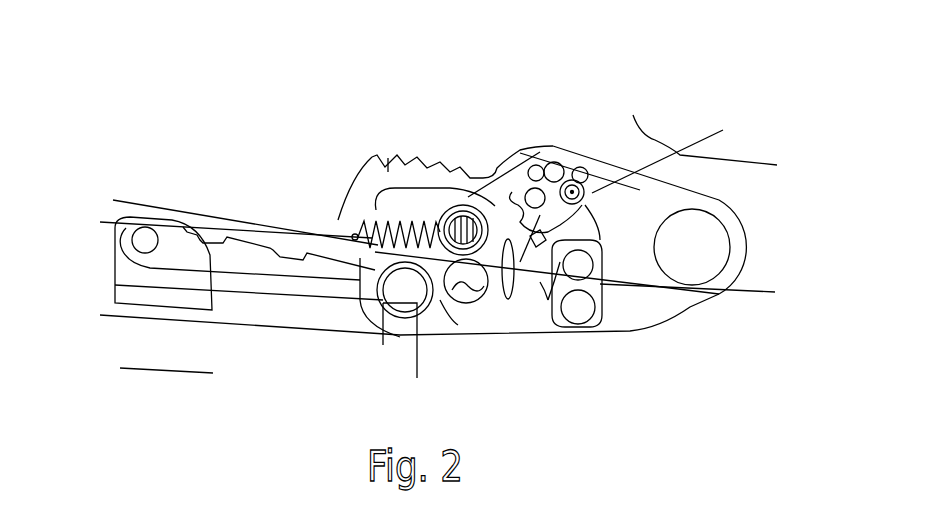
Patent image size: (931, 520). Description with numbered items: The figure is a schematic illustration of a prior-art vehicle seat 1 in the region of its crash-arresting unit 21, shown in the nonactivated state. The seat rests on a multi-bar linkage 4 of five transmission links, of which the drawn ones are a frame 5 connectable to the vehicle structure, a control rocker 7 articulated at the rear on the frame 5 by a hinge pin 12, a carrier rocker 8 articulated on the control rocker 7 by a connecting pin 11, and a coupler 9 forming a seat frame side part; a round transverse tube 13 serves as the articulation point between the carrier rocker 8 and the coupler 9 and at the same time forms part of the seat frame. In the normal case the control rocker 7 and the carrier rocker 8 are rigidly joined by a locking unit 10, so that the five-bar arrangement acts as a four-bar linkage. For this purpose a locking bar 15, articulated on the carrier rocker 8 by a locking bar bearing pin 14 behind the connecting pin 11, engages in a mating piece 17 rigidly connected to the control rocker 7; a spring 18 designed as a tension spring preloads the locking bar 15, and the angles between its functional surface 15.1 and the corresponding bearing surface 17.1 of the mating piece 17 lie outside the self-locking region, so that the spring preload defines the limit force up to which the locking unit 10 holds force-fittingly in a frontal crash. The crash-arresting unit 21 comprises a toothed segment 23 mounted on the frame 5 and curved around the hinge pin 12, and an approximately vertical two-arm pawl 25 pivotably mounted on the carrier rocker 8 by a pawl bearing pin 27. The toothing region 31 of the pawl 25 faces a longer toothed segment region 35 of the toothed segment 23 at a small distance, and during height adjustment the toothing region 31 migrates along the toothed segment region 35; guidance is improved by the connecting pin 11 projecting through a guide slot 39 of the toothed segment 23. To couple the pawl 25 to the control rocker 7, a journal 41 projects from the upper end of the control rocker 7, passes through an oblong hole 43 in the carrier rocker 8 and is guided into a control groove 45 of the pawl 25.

The vehicle seat 1 is at (473, 113).
The multi-bar linkage 4 is at (690, 315).
The frame 5 is at (412, 362).
The control rocker 7 is at (480, 305).
The carrier rocker 8 is at (640, 318).
The coupler 9 is at (735, 170).
The locking unit 10 is at (537, 325).
The connecting pin 11 is at (458, 325).
The hinge pin 12 is at (393, 325).
The transverse tube 13 is at (735, 243).
The locking bar bearing pin 14 is at (580, 323).
The locking bar 15 is at (620, 215).
The functional surface 15.1 is at (550, 300).
The mating piece 17 is at (527, 292).
The bearing surface 17.1 is at (564, 361).
The spring 18 is at (352, 237).
The crash-arresting unit 21 is at (473, 165).
The toothed segment 23 is at (388, 165).
The pawl 25 is at (512, 172).
The pawl bearing pin 27 is at (700, 158).
The toothing region 31 is at (497, 170).
The toothed segment region 35 is at (433, 168).
The guide slot 39 is at (353, 202).
The journal 41 is at (592, 198).
The oblong hole 43 is at (550, 166).
The control groove 45 is at (583, 170).